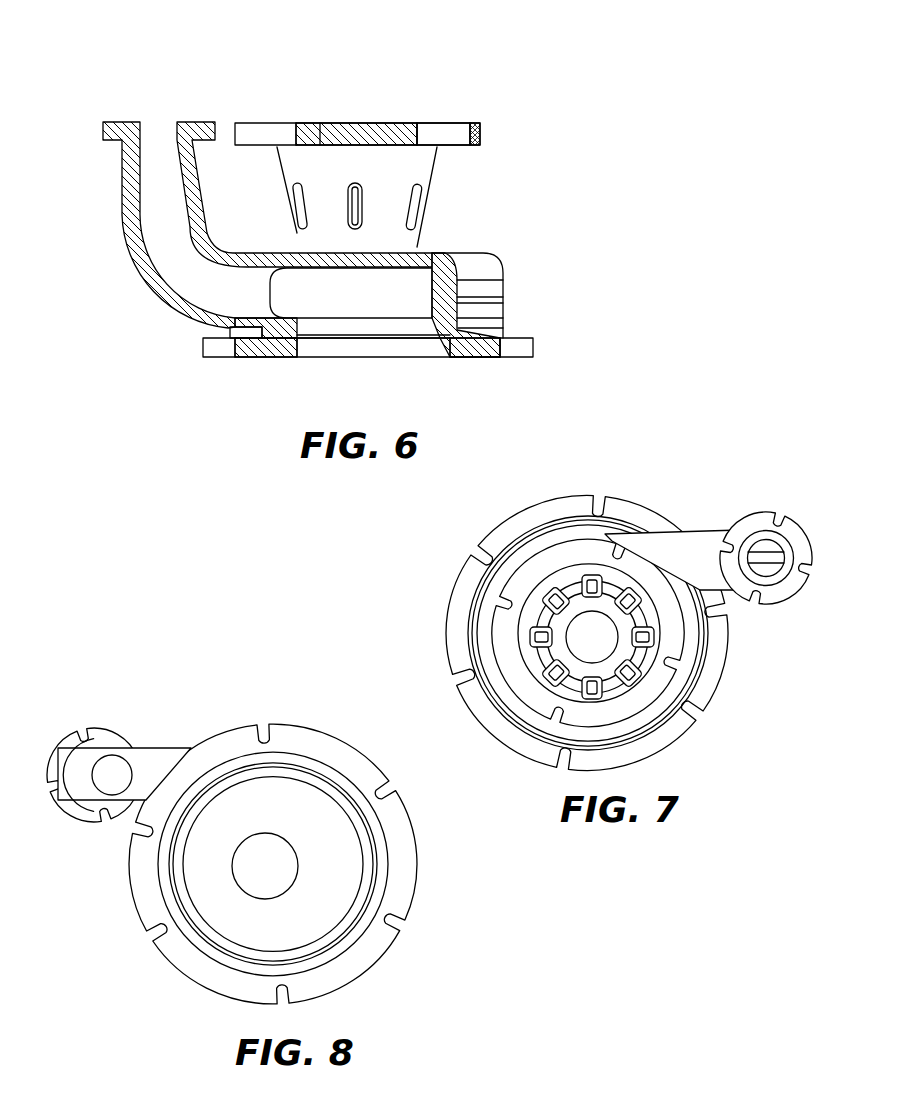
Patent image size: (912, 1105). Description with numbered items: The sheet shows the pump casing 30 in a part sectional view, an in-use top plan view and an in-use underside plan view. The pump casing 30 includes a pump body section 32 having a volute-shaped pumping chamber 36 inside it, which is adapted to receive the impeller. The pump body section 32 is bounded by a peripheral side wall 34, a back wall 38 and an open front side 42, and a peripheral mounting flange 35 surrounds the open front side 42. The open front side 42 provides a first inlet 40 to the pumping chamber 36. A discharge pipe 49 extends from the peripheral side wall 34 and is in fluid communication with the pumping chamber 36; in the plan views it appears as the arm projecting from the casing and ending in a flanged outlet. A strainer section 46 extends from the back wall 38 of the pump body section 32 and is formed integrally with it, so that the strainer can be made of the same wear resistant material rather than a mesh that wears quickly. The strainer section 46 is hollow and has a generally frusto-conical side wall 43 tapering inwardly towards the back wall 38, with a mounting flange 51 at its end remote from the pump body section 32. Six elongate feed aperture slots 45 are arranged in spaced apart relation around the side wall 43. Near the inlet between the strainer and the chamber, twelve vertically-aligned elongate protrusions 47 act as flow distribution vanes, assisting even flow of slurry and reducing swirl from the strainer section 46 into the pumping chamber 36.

In FIG. 6, the pump casing 30 is at (405, 60).
In FIG. 7, the pump casing 30 is at (686, 476).
In FIG. 8, the pump casing 30 is at (192, 686).
In FIG. 6, the pump body section 32 is at (503, 251).
In FIG. 6, the peripheral side wall 34 is at (503, 300).
In FIG. 7, the peripheral mounting flange 35 is at (722, 690).
In FIG. 8, the peripheral mounting flange 35 is at (150, 890).
In FIG. 6, the pumping chamber 36 is at (366, 300).
In FIG. 6, the back wall 38 is at (420, 248).
In FIG. 6, the first inlet 40 is at (352, 354).
In FIG. 6, the open front side 42 is at (413, 343).
In FIG. 6, the frusto-conical side wall 43 is at (412, 161).
In FIG. 6, the elongate feed aperture slots 45 is at (408, 190).
In FIG. 6, the strainer section 46 is at (270, 159).
In FIG. 7, the elongate protrusions 47 is at (640, 640).
In FIG. 6, the discharge pipe 49 is at (122, 222).
In FIG. 7, the discharge pipe 49 is at (712, 527).
In FIG. 8, the discharge pipe 49 is at (150, 748).
In FIG. 6, the mounting flange 51 is at (455, 135).